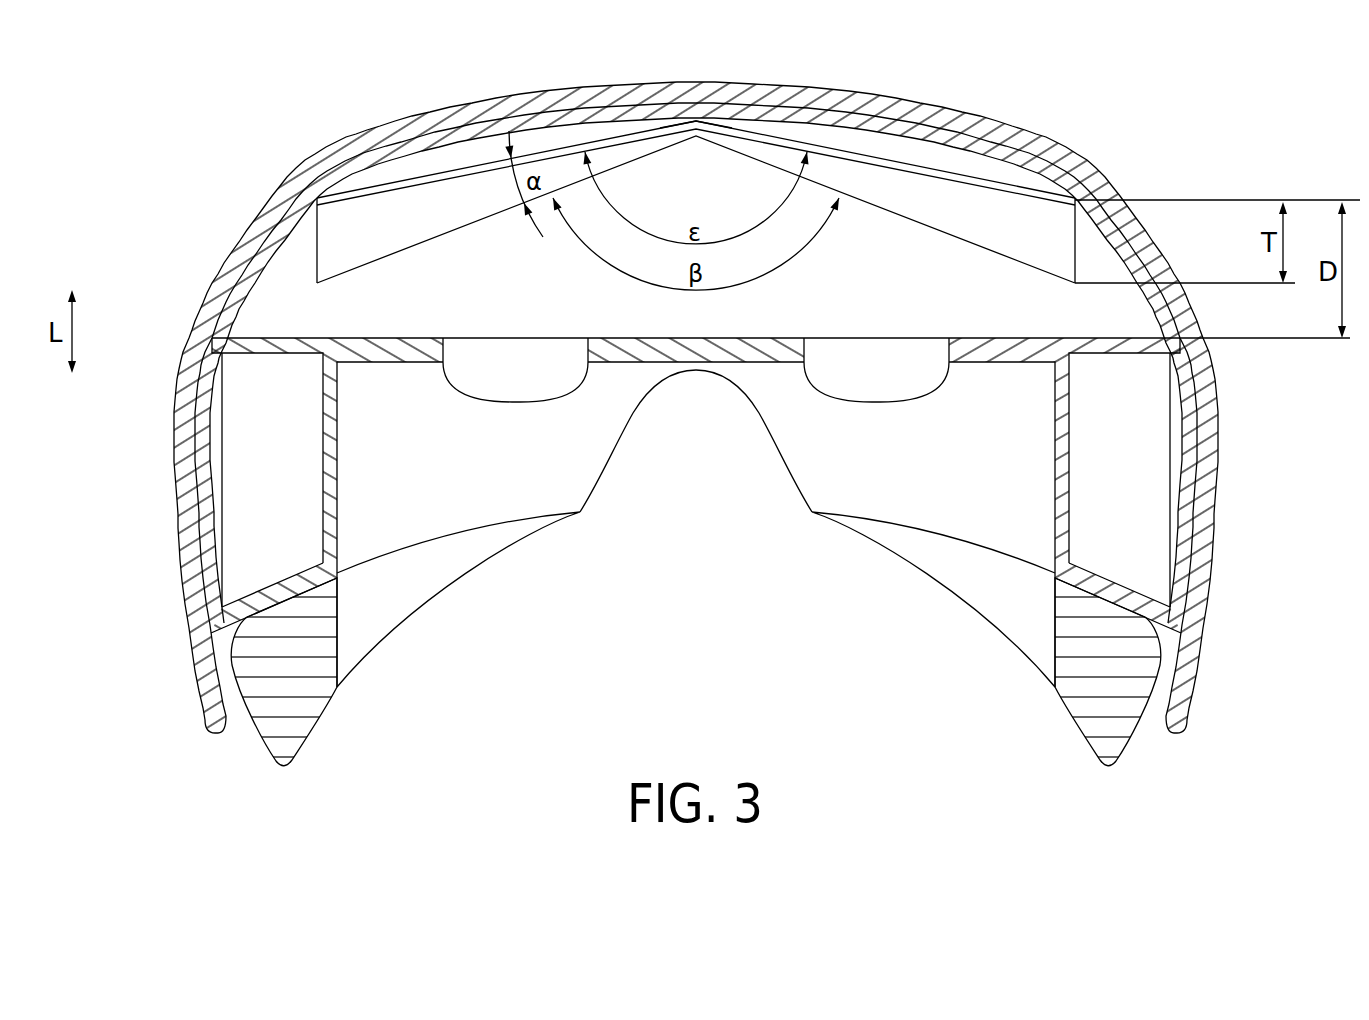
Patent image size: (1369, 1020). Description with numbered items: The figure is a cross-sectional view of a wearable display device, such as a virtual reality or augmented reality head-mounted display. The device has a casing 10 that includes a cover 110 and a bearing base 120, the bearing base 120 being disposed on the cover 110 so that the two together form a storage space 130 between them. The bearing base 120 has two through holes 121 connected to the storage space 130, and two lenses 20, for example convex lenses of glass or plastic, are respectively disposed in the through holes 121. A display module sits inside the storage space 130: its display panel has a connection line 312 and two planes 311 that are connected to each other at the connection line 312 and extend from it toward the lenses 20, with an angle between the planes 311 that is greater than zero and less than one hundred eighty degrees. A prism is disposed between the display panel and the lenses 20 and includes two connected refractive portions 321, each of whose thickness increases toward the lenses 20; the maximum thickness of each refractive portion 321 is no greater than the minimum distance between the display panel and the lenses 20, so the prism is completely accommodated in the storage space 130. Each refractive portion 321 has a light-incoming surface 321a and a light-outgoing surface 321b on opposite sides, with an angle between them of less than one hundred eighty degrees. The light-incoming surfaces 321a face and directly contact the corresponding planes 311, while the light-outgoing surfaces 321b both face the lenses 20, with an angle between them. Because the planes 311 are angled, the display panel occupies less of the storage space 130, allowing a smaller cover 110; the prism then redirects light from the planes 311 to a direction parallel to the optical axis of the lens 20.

The casing 10 is at (752, 424).
The cover 110 is at (1193, 613).
The bearing base 120 is at (1150, 652).
The storage space 130 is at (290, 310).
The through hole 121 is at (460, 366).
The lens 20 is at (512, 386).
The plane 311 is at (355, 203).
The connection line 312 is at (696, 133).
The refractive portion 321 is at (696, 198).
The light-incoming surface 321a is at (480, 168).
The light-outgoing surface 321b is at (392, 256).